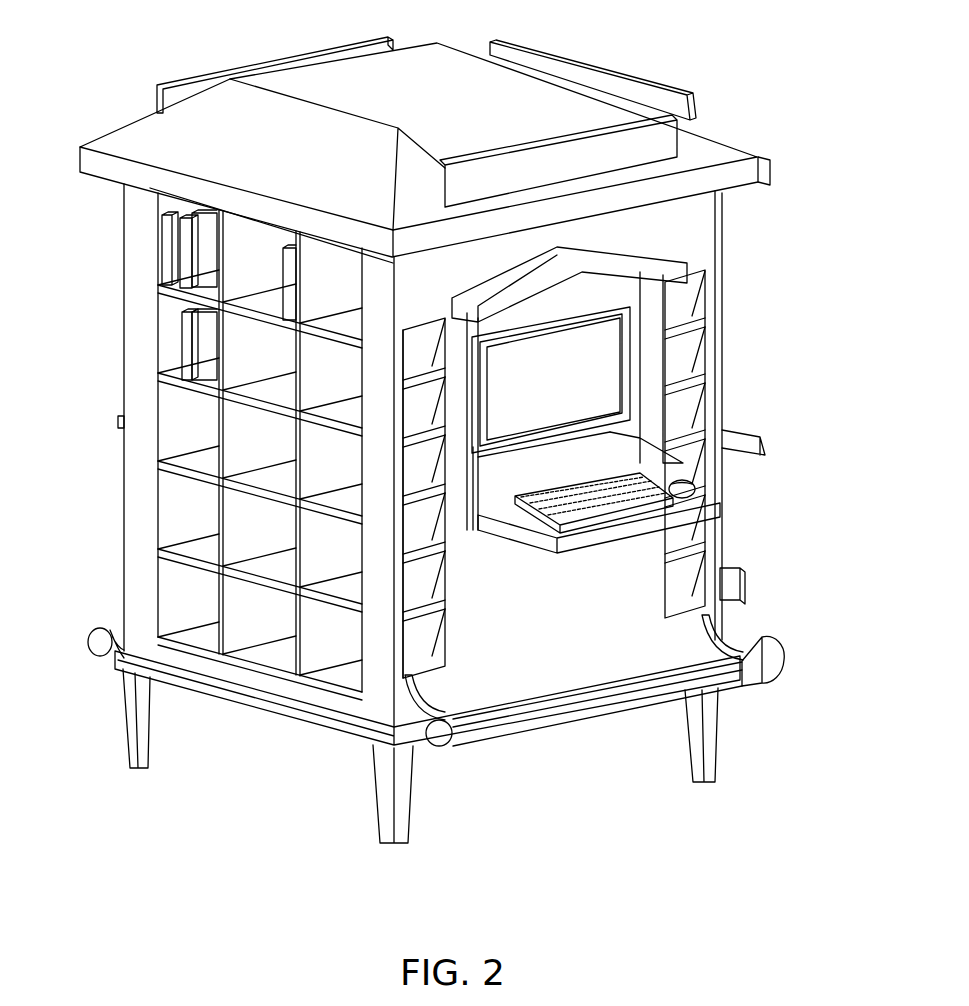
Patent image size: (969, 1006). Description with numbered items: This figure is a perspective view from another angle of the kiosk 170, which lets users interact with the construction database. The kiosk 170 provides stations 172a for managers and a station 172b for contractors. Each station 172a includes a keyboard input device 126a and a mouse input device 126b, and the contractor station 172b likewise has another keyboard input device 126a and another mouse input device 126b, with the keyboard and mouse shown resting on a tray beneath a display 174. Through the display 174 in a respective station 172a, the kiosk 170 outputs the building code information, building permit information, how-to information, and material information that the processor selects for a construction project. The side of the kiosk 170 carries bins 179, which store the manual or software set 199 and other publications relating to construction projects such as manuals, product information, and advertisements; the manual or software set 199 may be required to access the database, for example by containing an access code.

The kiosk 170 is at (668, 66).
The station 172a is at (192, 66).
The station 172b is at (740, 287).
The display 174 is at (567, 380).
The keyboard input device 126a is at (675, 517).
The mouse input device 126b is at (694, 486).
The bins 179 is at (325, 659).
The manual or software set 199 is at (186, 352).